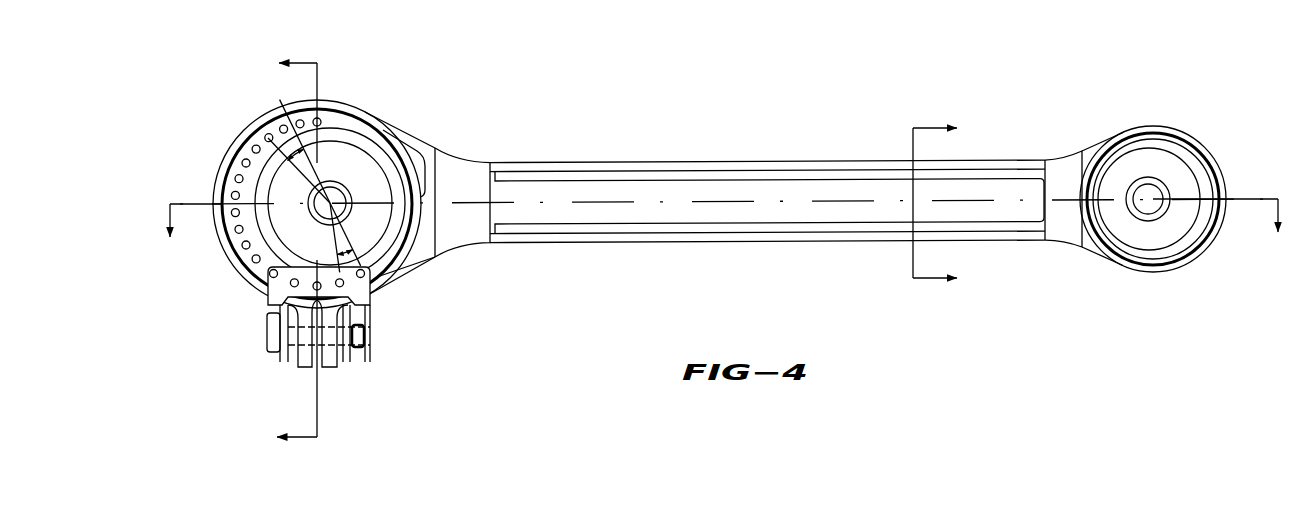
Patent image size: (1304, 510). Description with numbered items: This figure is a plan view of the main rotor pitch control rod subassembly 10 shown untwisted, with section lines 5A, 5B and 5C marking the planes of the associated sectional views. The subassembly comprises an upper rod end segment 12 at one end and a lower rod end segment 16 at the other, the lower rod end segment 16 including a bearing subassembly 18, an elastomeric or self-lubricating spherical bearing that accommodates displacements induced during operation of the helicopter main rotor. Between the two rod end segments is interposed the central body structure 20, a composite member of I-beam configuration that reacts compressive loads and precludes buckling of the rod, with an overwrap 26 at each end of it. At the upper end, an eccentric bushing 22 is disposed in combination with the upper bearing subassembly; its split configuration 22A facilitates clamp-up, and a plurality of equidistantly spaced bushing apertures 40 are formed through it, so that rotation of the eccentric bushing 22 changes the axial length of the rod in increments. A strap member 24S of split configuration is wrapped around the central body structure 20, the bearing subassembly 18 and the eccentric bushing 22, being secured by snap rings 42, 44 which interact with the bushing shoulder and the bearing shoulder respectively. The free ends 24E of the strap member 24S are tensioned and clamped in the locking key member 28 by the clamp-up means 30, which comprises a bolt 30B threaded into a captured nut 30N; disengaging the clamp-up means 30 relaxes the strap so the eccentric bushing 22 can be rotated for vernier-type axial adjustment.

The main rotor pitch control rod subassembly 10 is at (776, 110).
The upper rod end segment 12 is at (412, 92).
The lower rod end segment 16 is at (1160, 108).
The bearing subassembly 18 is at (1118, 175).
The central body structure 20 is at (558, 186).
The eccentric bushing 22 is at (349, 112).
The split configuration 22A is at (436, 147).
The strap member 24S is at (233, 268).
The free ends 24E is at (306, 365).
The overwrap 26 is at (476, 163).
The locking key member 28 is at (230, 320).
The clamp-up means 30 is at (376, 346).
The bolt 30B is at (266, 348).
The captured nut 30N is at (347, 326).
The bushing apertures 40 is at (219, 168).
The snap ring 42 is at (268, 138).
The snap ring 44 is at (1210, 156).
The section line 5A is at (725, 236).
The section line 5B is at (277, 253).
The section line 5C is at (954, 205).